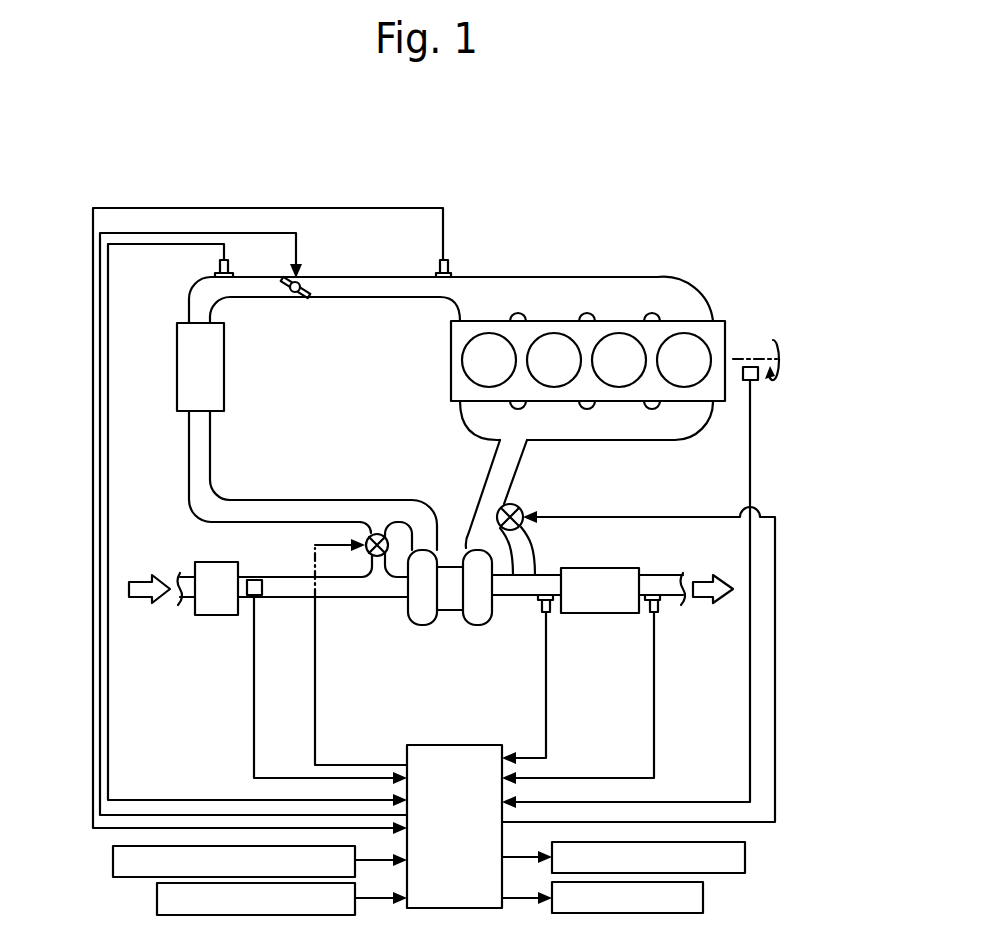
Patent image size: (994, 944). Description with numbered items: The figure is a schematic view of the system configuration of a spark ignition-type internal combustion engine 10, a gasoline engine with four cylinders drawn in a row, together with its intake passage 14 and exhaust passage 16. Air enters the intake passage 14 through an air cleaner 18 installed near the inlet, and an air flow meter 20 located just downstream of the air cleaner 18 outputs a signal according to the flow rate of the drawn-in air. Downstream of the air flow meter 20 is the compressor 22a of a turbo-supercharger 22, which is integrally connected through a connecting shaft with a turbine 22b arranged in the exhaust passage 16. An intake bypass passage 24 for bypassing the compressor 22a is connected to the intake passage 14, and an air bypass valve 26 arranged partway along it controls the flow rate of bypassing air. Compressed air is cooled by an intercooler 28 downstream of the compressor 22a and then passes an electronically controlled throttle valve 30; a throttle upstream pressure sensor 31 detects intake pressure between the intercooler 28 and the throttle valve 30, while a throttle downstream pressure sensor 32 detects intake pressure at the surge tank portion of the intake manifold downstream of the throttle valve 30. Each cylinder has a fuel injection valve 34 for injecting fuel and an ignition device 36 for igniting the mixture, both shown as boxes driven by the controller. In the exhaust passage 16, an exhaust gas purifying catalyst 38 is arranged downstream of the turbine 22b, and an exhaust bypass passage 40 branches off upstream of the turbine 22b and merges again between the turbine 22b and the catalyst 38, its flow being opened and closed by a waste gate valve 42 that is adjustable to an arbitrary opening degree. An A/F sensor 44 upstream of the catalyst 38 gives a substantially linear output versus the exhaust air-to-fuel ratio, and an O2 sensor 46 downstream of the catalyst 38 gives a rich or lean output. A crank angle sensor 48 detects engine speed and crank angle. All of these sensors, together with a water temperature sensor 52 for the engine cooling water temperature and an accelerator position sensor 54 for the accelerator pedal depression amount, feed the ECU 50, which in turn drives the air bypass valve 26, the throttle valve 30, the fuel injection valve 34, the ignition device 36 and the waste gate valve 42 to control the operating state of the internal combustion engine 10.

The internal combustion engine 10 is at (694, 214).
The intake passage 14 is at (283, 512).
The exhaust passage 16 is at (511, 465).
The air cleaner 18 is at (200, 562).
The air flow meter 20 is at (252, 578).
The turbo-supercharger 22 is at (452, 620).
The compressor 22a is at (420, 612).
The turbine 22b is at (477, 618).
The intake bypass passage 24 is at (373, 563).
The air bypass valve 26 is at (367, 533).
The intercooler 28 is at (224, 373).
The throttle valve 30 is at (282, 280).
The throttle upstream pressure sensor 31 is at (220, 265).
The throttle downstream pressure sensor 32 is at (440, 263).
The fuel injection valve 34 is at (747, 858).
The ignition device 36 is at (705, 897).
The exhaust gas purifying catalyst 38 is at (610, 613).
The exhaust bypass passage 40 is at (522, 538).
The waste gate valve 42 is at (518, 506).
The A/F sensor 44 is at (553, 612).
The O2 sensor 46 is at (659, 612).
The crank angle sensor 48 is at (755, 382).
The ECU 50 is at (447, 745).
The water temperature sensor 52 is at (113, 863).
The accelerator position sensor 54 is at (157, 900).